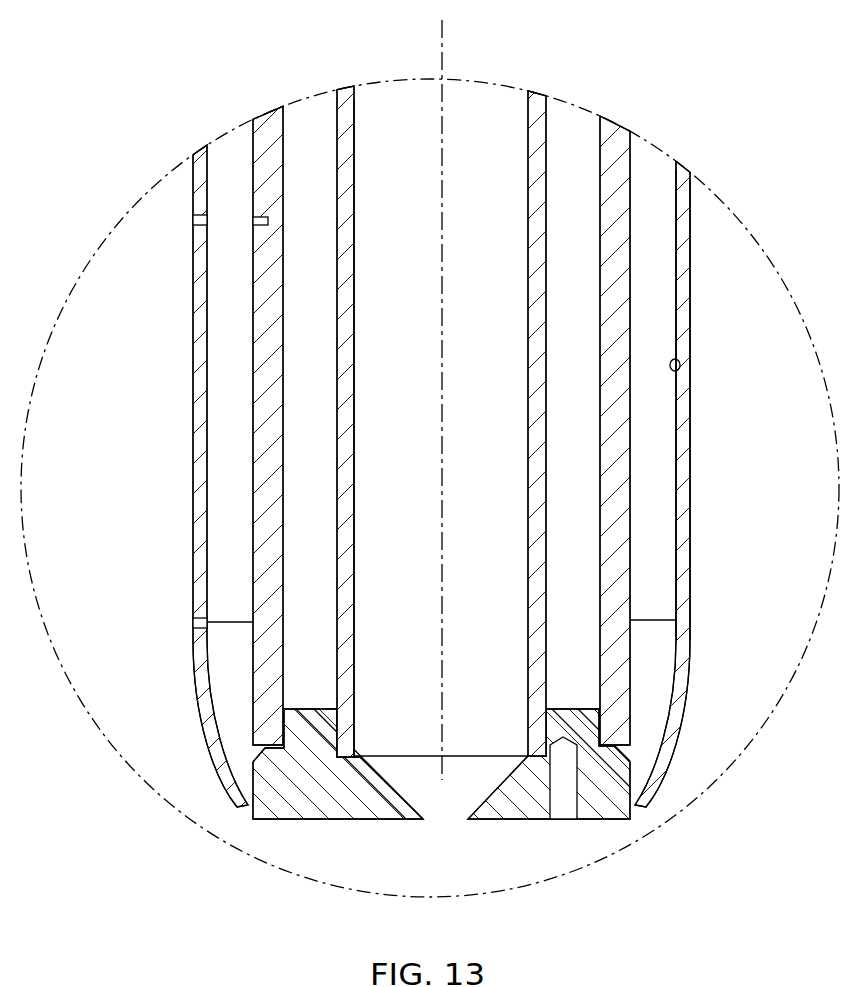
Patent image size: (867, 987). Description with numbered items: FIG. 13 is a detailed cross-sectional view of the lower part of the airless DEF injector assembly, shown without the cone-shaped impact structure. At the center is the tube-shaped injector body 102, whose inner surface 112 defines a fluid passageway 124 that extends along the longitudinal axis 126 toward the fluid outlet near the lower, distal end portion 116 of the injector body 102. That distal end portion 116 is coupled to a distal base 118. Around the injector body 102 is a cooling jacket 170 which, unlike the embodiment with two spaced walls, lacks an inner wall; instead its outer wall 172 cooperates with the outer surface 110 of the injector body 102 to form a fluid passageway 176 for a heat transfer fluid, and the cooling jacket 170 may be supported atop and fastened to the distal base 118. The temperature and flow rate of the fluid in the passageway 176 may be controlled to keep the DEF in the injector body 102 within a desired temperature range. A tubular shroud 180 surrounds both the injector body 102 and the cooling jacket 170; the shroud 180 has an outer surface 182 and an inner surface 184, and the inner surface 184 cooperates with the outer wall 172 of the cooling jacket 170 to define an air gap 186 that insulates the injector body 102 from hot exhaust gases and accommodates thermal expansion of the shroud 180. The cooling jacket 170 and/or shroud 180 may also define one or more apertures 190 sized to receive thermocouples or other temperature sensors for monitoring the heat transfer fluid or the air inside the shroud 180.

The injector body 102 is at (536, 110).
The outer surface 110 is at (333, 93).
The inner surface 112 is at (360, 93).
The distal end portion 116 is at (368, 842).
The distal base 118 is at (534, 806).
The fluid passageway 124 is at (480, 104).
The longitudinal axis 126 is at (438, 42).
The cooling jacket 170 is at (634, 170).
The outer wall 172 is at (258, 360).
The fluid passageway 176 is at (312, 408).
The shroud 180 is at (686, 268).
The outer surface 182 is at (692, 443).
The inner surface 184 is at (738, 372).
The air gap 186 is at (662, 515).
The aperture 190 is at (188, 218).